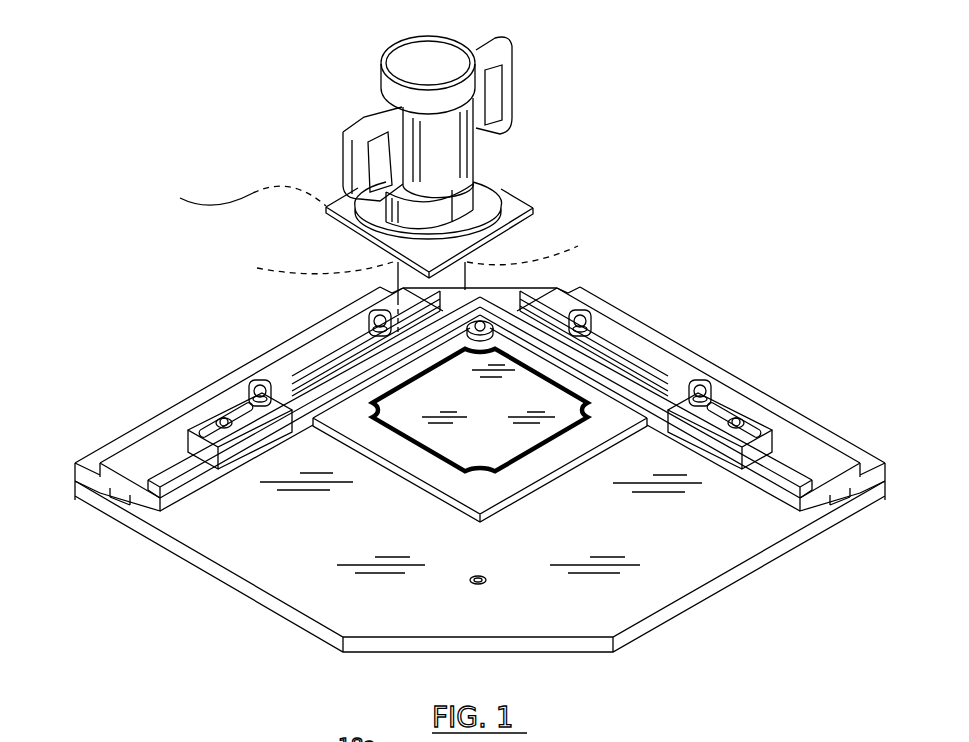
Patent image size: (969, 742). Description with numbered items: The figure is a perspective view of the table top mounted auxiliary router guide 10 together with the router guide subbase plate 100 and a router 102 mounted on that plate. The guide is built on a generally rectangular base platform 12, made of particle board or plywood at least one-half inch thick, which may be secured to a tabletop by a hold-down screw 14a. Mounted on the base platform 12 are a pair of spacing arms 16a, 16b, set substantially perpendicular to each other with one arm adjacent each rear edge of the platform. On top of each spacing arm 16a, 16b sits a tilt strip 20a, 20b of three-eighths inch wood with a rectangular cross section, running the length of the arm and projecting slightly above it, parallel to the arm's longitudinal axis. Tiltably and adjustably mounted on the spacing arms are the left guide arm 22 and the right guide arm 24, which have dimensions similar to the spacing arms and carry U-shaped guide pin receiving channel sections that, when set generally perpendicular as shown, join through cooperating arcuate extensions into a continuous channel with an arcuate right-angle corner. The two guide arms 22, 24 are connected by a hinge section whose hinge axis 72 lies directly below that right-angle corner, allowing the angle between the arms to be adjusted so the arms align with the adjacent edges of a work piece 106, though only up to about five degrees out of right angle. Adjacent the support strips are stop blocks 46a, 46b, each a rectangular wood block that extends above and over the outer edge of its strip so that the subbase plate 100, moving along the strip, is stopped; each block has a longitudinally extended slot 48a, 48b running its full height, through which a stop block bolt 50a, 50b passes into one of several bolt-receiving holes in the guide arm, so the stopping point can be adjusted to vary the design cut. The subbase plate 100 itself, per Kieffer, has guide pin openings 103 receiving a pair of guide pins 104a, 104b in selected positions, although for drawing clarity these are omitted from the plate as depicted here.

The auxiliary router guide 10 is at (714, 354).
The base platform 12 is at (657, 587).
The hold-down screw 14a is at (480, 585).
The spacing arm 16a is at (75, 482).
The spacing arm 16b is at (890, 497).
The tilt strip 20a is at (108, 490).
The tilt strip 20b is at (852, 490).
The left guide arm 22 is at (303, 358).
The right guide arm 24 is at (647, 358).
The stop block 46a is at (213, 442).
The stop block 46b is at (757, 450).
The slot 48a is at (201, 424).
The slot 48b is at (724, 408).
The stop block bolt 50a is at (222, 420).
The stop block bolt 50b is at (742, 422).
The hinge axis 72 is at (470, 340).
The subbase plate 100 is at (517, 210).
The workpiece fixture 102 is at (455, 130).
The guide pin openings 103 is at (230, 191).
The guide pin 104a is at (300, 277).
The guide pin 104b is at (549, 247).
The work piece 106 is at (415, 455).